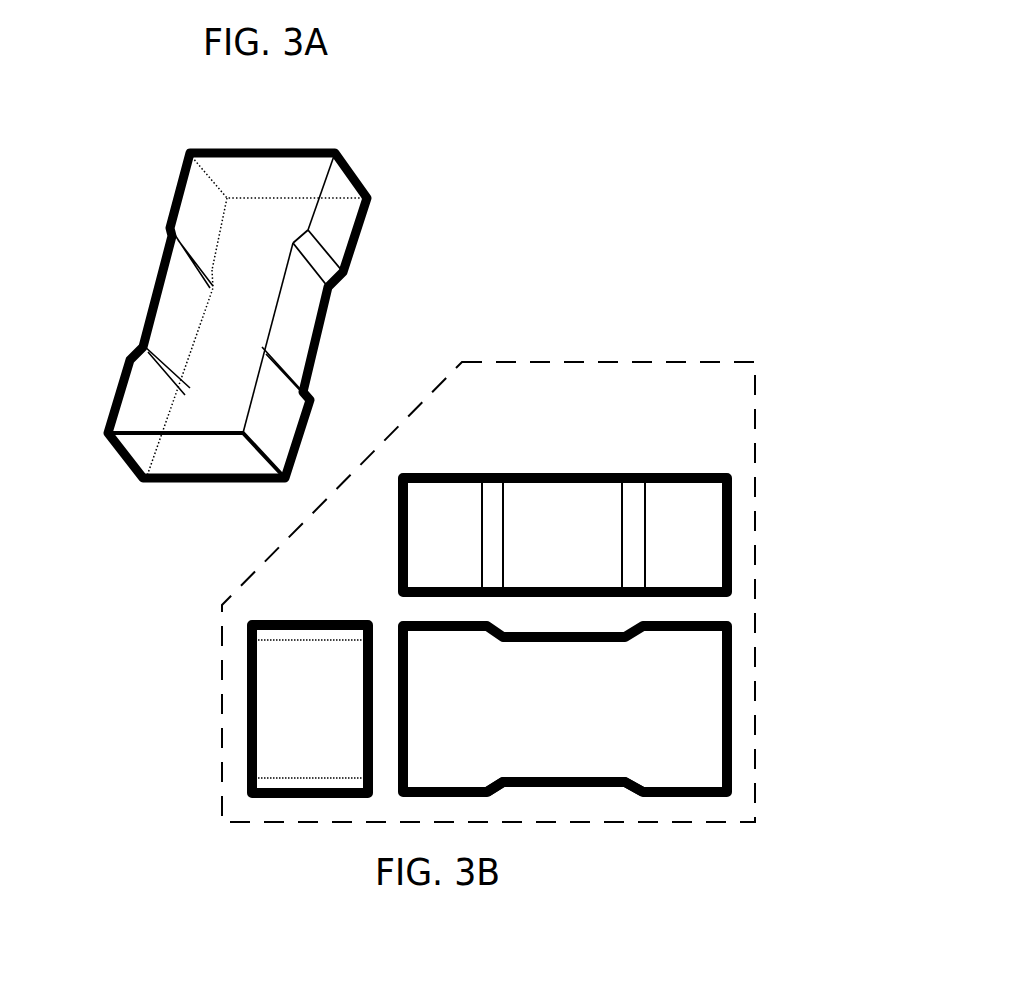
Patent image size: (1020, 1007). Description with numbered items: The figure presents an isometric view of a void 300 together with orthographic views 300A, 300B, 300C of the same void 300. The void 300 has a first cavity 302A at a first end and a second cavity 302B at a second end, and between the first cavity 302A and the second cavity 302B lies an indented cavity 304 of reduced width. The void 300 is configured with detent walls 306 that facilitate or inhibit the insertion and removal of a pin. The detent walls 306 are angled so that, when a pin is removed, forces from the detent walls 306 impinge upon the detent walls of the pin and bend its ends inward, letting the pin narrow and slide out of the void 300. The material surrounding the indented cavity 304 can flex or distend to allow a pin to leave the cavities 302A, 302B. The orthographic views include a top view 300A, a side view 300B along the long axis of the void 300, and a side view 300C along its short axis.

In FIG. 3A, the void 300 is at (353, 175).
In FIG. 3A, the first cavity 302A is at (227, 226).
In FIG. 3A, the second cavity 302B is at (190, 387).
In FIG. 3A, the indented cavity 304 is at (217, 305).
In FIG. 3A, the detent walls 306 is at (310, 247).
In FIG. 3B, the detent walls 306 is at (496, 763).
In FIG. 3B, the top view 300A is at (722, 740).
In FIG. 3B, the side view 300B is at (733, 527).
In FIG. 3B, the side view 300C is at (247, 740).